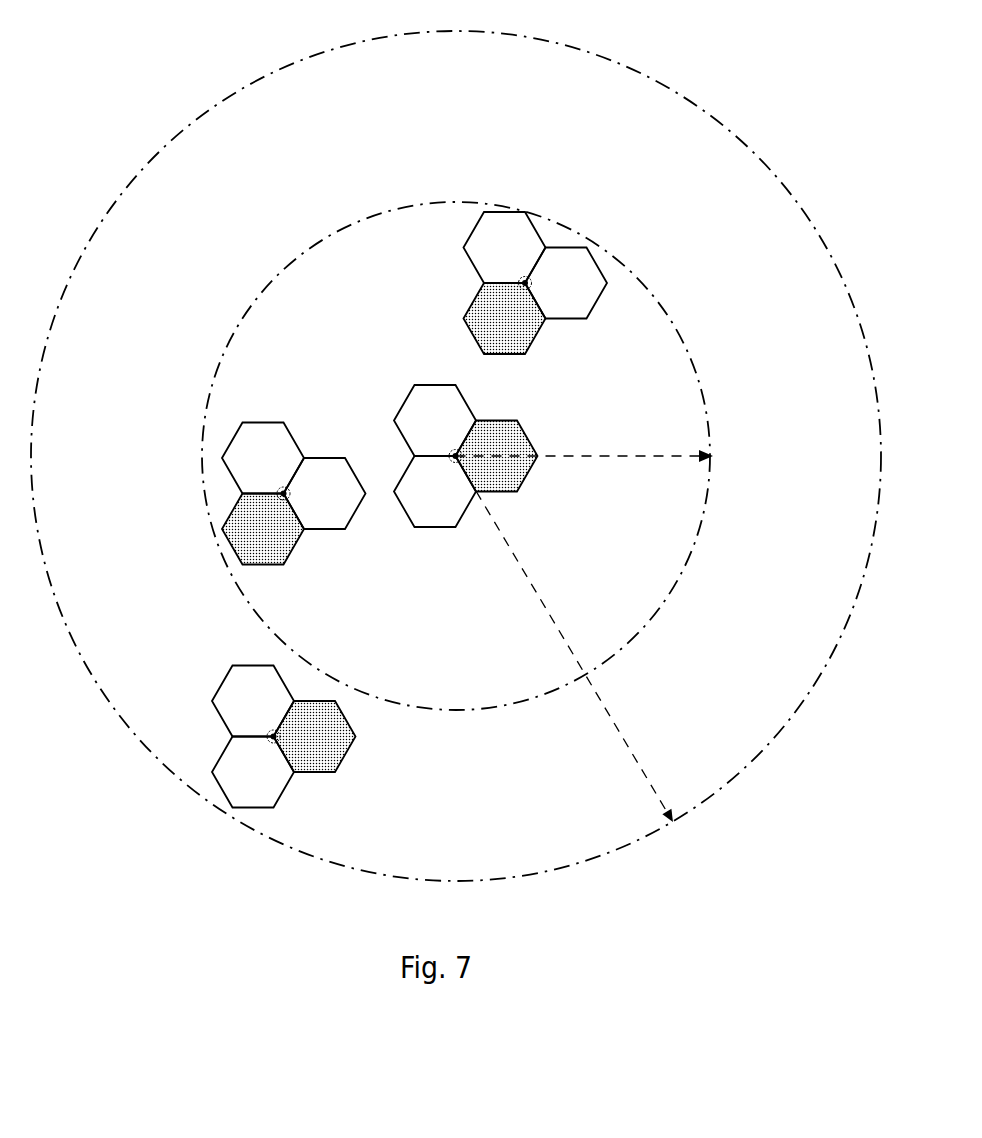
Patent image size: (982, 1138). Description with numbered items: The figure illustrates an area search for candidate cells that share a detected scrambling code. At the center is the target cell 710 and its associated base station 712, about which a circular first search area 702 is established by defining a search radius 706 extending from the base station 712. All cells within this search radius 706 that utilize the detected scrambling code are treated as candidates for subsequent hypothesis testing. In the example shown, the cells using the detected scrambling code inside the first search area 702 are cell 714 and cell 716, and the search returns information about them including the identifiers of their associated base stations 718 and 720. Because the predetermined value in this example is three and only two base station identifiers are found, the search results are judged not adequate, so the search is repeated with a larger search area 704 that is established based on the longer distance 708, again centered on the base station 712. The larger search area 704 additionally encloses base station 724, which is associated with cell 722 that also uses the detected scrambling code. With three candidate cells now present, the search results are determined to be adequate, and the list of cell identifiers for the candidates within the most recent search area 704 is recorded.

The search area 702 is at (455, 201).
The larger search area 704 is at (455, 31).
The search radius 706 is at (578, 455).
The distance 708 is at (520, 566).
The target cell 710 is at (495, 418).
The base station 712 is at (450, 454).
The cell 714 is at (469, 308).
The cell 716 is at (263, 565).
The base station 718 is at (290, 498).
The base station 720 is at (531, 289).
The cell 722 is at (348, 750).
The base station 724 is at (268, 735).